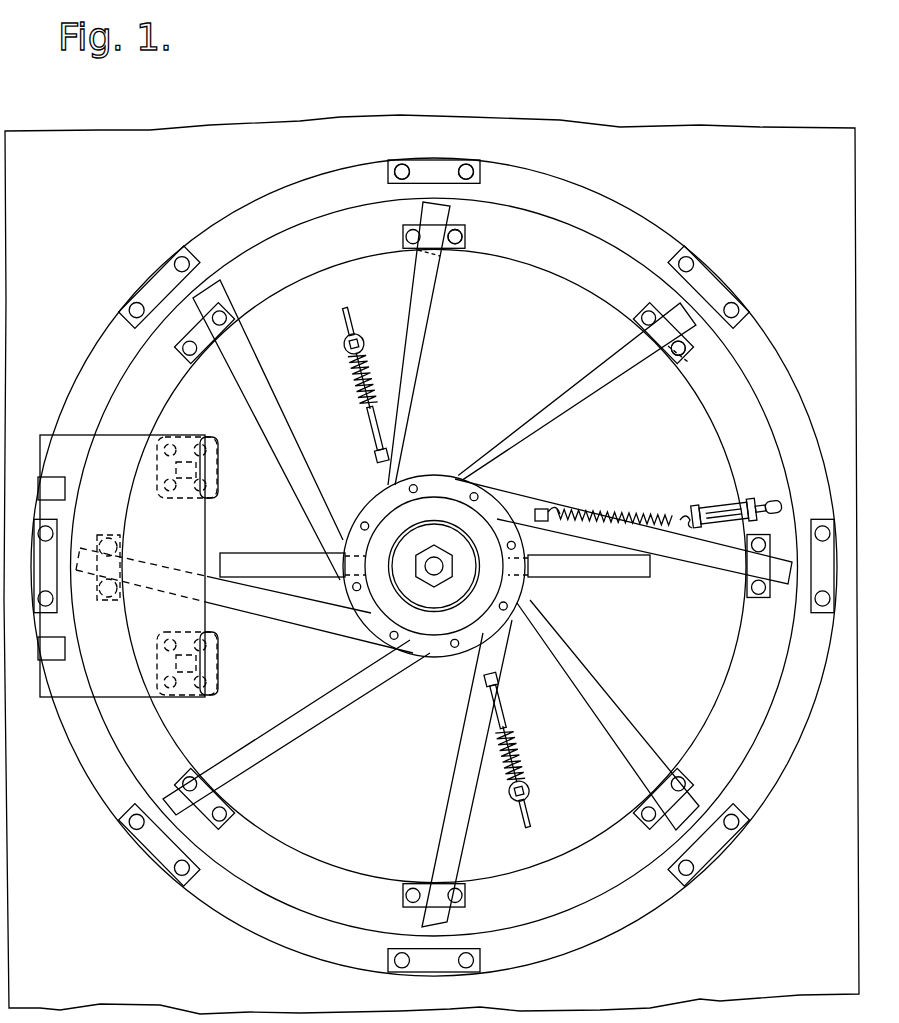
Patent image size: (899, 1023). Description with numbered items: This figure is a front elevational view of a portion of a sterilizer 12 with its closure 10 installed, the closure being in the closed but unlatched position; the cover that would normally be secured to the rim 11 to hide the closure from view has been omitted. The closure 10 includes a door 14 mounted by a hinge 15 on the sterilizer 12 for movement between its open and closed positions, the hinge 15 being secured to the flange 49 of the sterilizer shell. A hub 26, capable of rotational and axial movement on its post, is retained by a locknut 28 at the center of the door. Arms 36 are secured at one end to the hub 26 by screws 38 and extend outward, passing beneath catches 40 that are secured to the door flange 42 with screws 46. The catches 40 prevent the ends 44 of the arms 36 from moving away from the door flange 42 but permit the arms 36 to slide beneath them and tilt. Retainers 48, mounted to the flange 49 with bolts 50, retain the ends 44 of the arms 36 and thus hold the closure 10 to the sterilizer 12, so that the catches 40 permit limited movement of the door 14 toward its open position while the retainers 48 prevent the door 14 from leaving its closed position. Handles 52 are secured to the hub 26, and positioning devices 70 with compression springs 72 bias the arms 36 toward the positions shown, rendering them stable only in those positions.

The closure 10 is at (517, 345).
The rim 11 is at (718, 366).
The sterilizer 12 is at (717, 142).
The door 14 is at (566, 240).
The hinge 15 is at (170, 544).
The hub 26 is at (428, 505).
The locknut 28 is at (450, 555).
The arms 36 is at (238, 402).
The screws 38 is at (410, 488).
The catches 40 is at (428, 231).
The door flange 42 is at (552, 268).
The ends 44 is at (440, 212).
The screws 46 is at (418, 253).
The retainers 48 is at (420, 180).
The flange 49 is at (532, 186).
The bolts 50 is at (406, 165).
The handles 52 is at (270, 556).
The positioning devices 70 is at (372, 418).
The compression springs 72 is at (352, 377).